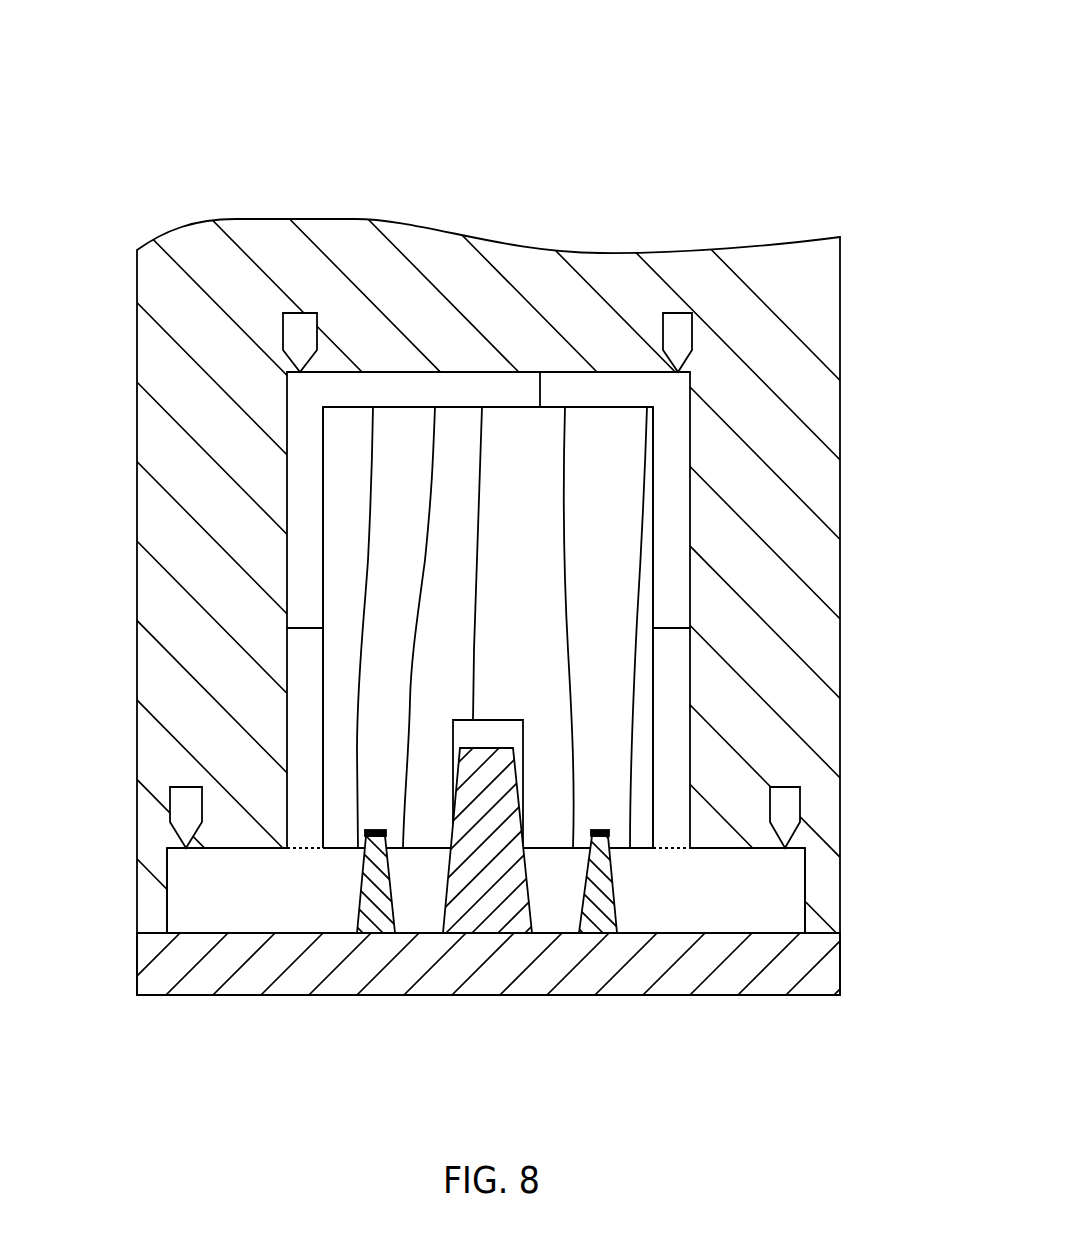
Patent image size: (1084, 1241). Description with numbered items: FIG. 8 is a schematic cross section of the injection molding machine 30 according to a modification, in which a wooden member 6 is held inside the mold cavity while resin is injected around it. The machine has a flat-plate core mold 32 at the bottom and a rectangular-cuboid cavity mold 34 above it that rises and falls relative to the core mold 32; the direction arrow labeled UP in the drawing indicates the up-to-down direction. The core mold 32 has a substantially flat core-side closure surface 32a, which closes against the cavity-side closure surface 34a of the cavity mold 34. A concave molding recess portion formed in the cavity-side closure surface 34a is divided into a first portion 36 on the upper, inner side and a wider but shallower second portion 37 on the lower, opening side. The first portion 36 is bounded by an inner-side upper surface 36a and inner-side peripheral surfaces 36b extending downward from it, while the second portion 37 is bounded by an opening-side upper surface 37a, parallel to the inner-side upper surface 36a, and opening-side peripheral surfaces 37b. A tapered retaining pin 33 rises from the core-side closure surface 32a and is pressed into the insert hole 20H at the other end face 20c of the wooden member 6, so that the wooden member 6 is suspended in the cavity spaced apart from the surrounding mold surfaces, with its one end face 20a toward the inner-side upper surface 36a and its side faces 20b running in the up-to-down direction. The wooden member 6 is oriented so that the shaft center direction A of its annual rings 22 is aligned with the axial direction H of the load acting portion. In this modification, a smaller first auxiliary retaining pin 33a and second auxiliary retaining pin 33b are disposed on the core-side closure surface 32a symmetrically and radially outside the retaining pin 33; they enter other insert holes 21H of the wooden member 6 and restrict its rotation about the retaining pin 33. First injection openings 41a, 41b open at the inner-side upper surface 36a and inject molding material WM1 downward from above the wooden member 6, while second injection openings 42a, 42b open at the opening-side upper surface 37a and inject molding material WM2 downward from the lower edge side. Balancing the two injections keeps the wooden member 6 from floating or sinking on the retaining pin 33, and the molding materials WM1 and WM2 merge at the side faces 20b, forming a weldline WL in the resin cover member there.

The injection molding machine 30 is at (700, 150).
The cavity mold 34 is at (851, 658).
The cavity-side closure surface 34a is at (838, 935).
The first injection opening 41a is at (337, 313).
The first injection opening 41b is at (715, 315).
The second injection opening 42a is at (217, 788).
The second injection opening 42b is at (823, 790).
The first portion 36 is at (666, 447).
The inner-side upper surface 36a is at (450, 372).
The inner-side peripheral surface 36b is at (275, 582).
The molding material WM1 is at (547, 400).
The molding material WM2 is at (258, 910).
The weldline WL is at (291, 636).
The wooden member 6 is at (664, 600).
The one end face 20a is at (605, 410).
The side face 20b is at (328, 440).
The other end face 20c is at (552, 853).
The insert hole 20H is at (524, 730).
The other insert hole 21H is at (375, 828).
The annual rings 22 is at (437, 424).
The shaft center direction of annual rings A is at (503, 455).
The axial direction of the load acting portion H is at (67, 392).
The second portion 37 is at (299, 910).
The opening-side upper surface 37a is at (248, 848).
The opening-side peripheral surface 37b is at (160, 910).
The core mold 32 is at (588, 1006).
The core-side closure surface 32a is at (677, 920).
The retaining pin 33 is at (445, 890).
The first auxiliary retaining pin 33a is at (359, 908).
The second auxiliary retaining pin 33b is at (580, 905).
The up direction UP is at (485, 115).